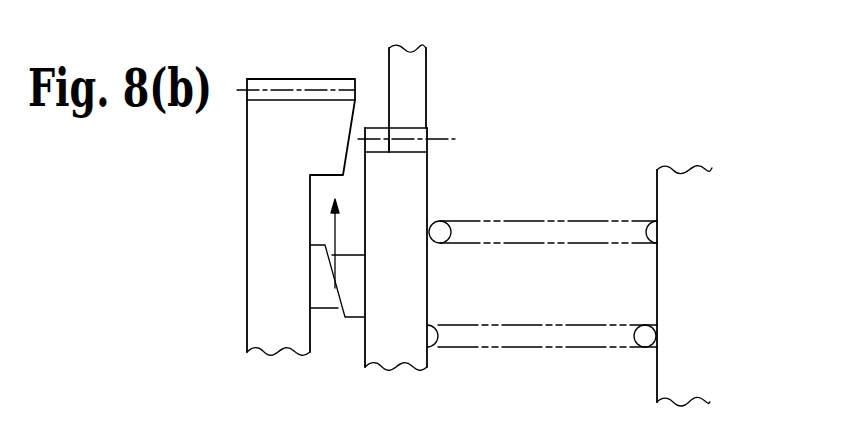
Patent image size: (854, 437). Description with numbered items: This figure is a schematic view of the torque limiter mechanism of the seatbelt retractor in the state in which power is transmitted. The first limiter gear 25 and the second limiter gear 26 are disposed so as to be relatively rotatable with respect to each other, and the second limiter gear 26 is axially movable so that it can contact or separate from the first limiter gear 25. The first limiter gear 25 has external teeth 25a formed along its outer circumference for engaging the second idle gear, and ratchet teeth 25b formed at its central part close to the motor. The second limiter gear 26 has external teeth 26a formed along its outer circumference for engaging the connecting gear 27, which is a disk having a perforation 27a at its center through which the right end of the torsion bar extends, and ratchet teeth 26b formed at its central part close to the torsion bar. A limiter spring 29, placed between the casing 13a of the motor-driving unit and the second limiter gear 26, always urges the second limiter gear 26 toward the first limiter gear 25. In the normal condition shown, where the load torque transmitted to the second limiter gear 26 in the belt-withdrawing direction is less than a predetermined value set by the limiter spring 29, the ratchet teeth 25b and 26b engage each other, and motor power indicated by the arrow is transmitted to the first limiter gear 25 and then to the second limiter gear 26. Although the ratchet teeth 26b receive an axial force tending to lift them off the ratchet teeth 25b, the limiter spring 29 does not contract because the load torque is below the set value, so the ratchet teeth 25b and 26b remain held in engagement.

The casing 13a is at (678, 192).
The first limiter gear 25 is at (258, 216).
The external teeth 25a is at (268, 80).
The ratchet teeth 25b is at (327, 297).
The second limiter gear 26 is at (410, 288).
The external teeth 26a is at (377, 130).
The ratchet teeth 26b is at (350, 305).
The connecting gear 27 is at (413, 73).
The perforation 27a is at (397, 133).
The limiter spring 29 is at (643, 348).